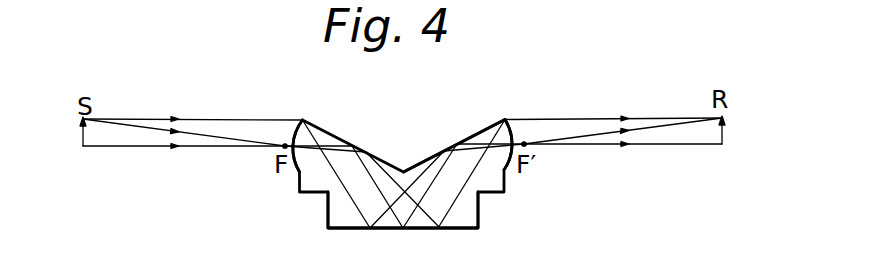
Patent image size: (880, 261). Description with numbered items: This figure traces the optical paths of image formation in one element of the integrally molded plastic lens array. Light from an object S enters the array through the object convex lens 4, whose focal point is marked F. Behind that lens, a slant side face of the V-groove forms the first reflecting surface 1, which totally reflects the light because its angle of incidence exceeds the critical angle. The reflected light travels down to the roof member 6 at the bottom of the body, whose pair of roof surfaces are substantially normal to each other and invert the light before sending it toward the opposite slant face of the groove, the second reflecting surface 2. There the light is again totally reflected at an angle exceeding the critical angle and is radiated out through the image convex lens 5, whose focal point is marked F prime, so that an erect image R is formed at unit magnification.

The first reflecting surface 1 is at (340, 132).
The second reflecting surface 2 is at (472, 135).
The object convex lens 4 is at (295, 128).
The image convex lens 5 is at (509, 124).
The roof member 6 is at (478, 213).